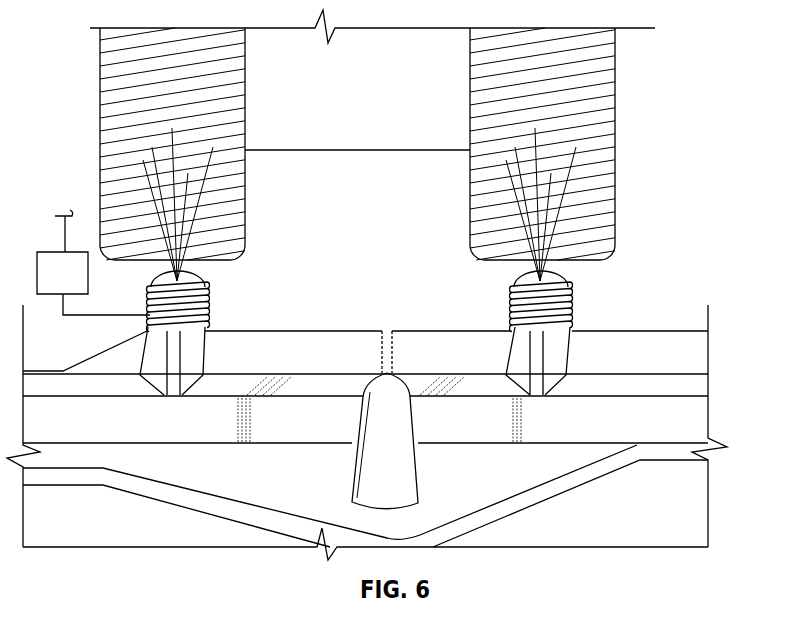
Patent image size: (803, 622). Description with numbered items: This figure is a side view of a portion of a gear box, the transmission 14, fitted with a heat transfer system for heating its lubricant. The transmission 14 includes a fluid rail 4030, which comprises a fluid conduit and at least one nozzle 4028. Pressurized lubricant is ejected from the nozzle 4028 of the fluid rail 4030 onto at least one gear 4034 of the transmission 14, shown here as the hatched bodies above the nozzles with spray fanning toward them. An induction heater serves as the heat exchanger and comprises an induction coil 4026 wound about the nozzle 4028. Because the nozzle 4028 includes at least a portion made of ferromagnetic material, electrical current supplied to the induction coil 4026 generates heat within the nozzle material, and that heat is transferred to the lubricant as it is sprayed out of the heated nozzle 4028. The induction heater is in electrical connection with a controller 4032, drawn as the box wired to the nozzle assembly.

The transmission 14 is at (688, 102).
The induction coil 4026 is at (512, 310).
The nozzle 4028 is at (558, 338).
The fluid rail 4030 is at (585, 410).
The controller 4032 is at (53, 267).
The gear 4034 is at (594, 70).